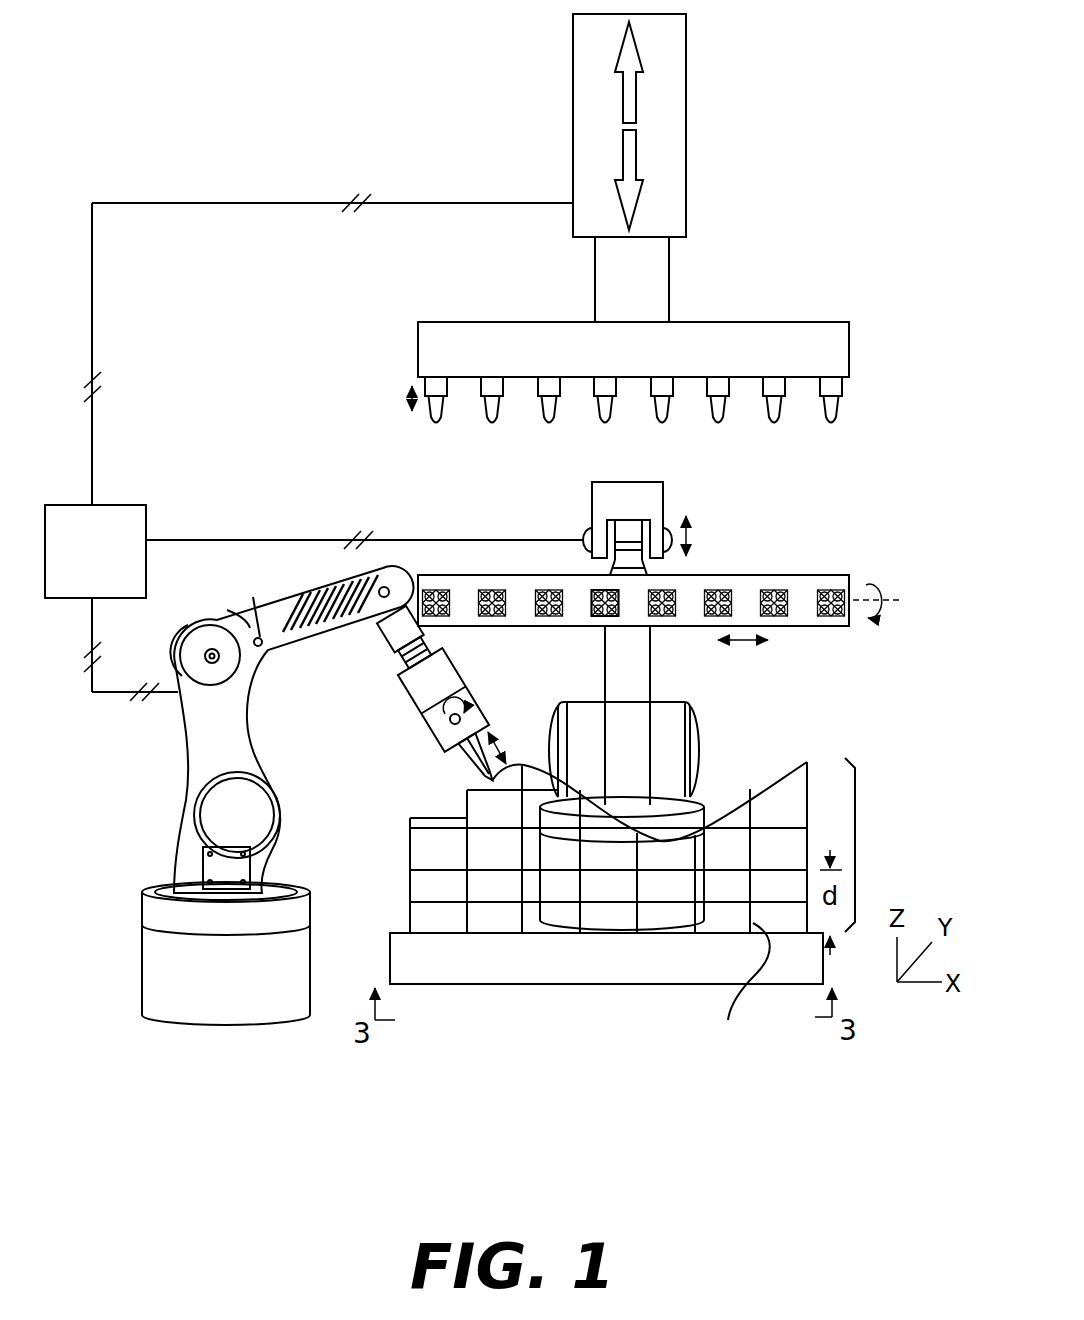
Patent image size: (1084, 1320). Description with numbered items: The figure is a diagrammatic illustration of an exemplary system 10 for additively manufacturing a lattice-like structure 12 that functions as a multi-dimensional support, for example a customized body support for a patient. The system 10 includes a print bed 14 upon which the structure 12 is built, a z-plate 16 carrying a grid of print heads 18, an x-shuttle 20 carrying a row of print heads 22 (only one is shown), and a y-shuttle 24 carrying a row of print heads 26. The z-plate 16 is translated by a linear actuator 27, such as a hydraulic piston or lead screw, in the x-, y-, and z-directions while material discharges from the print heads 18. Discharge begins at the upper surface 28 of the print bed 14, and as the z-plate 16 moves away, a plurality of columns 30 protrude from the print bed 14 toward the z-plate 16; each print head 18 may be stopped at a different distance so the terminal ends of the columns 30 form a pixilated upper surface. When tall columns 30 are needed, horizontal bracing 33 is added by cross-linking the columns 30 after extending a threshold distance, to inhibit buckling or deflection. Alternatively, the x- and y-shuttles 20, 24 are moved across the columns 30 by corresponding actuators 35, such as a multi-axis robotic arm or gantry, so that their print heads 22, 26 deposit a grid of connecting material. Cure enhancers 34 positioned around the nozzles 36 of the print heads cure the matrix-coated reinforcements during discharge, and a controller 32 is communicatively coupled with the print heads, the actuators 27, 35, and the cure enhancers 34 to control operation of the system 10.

The system 10 is at (826, 146).
The lattice-like structure 12 is at (856, 842).
The print bed 14 is at (616, 973).
The z-plate 16 is at (620, 365).
The print heads 18 is at (782, 412).
The x-shuttle 20 is at (478, 705).
The print heads 22 is at (483, 777).
The y-shuttle 24 is at (850, 577).
The print heads 26 is at (832, 590).
The linear actuator 27 is at (620, 293).
The upper surface 28 is at (400, 933).
The columns 30 is at (803, 921).
The controller 32 is at (81, 565).
The horizontal bracing 33 is at (428, 868).
The cure enhancers 34 is at (620, 606).
The actuators 35 is at (209, 761).
The nozzles 36 is at (594, 596).